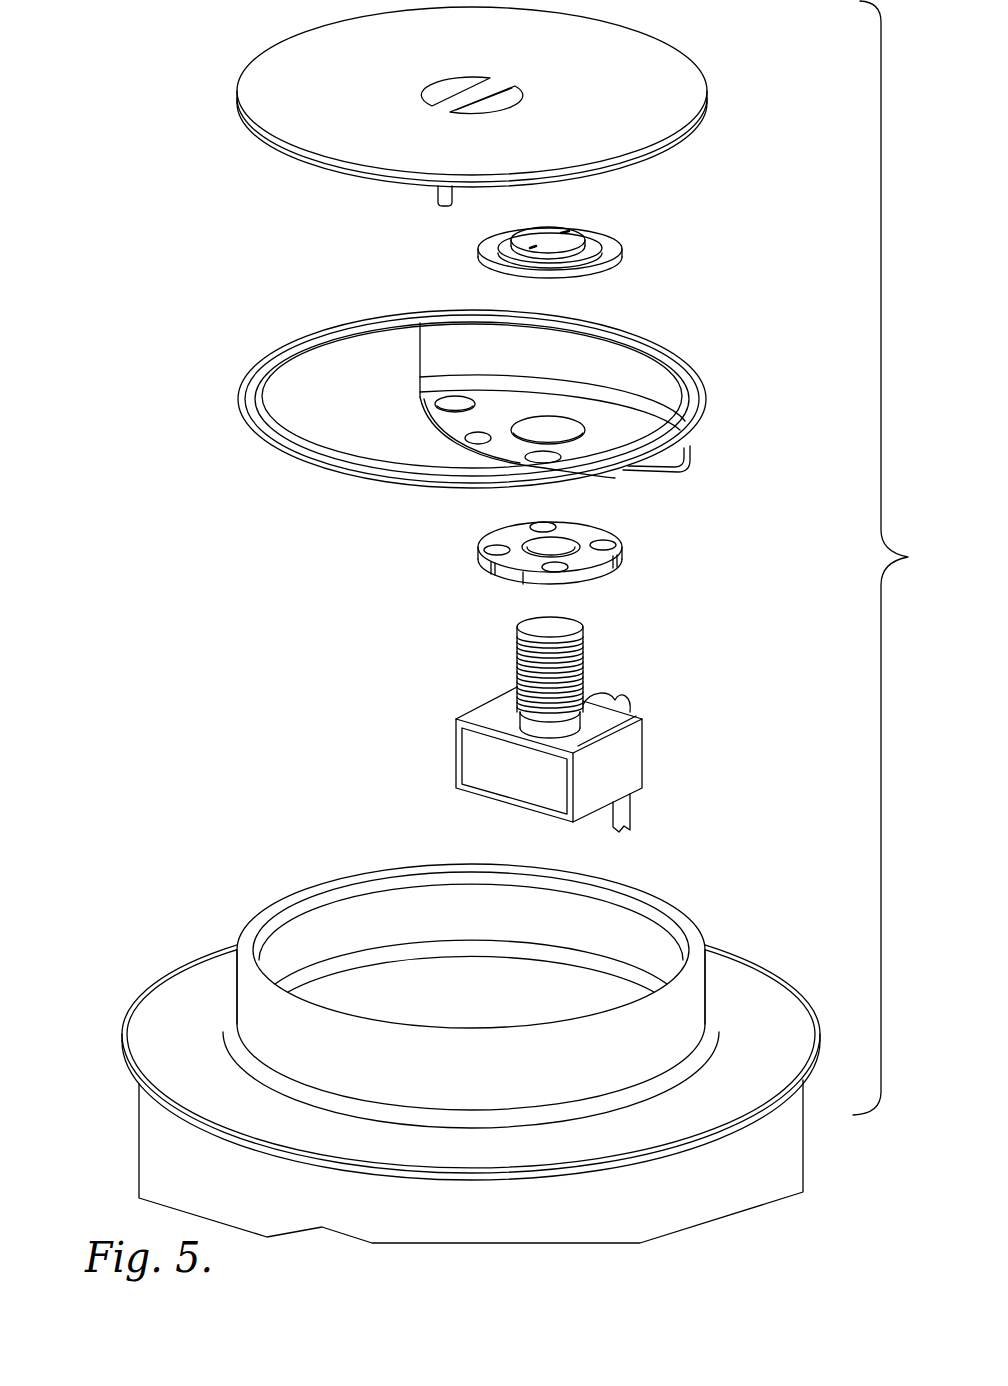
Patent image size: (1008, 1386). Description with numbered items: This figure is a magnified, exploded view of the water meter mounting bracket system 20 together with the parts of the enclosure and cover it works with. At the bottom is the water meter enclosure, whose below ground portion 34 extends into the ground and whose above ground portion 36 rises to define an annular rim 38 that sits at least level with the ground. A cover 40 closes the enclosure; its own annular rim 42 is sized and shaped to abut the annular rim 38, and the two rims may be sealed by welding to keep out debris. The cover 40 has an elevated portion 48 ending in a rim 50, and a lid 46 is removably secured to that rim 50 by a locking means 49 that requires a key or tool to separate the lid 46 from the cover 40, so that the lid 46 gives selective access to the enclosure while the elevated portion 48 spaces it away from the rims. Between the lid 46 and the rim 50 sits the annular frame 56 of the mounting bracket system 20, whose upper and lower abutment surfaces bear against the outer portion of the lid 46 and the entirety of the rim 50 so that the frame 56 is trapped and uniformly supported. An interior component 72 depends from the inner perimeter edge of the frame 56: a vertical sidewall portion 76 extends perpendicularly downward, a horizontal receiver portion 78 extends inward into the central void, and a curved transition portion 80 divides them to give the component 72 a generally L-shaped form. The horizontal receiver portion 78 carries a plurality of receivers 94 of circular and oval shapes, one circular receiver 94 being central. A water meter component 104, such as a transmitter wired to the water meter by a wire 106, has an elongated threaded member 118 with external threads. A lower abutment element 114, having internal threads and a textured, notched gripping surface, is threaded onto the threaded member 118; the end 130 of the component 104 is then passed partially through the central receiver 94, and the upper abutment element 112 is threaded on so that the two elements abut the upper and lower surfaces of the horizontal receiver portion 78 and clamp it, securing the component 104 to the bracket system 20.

The water meter mounting bracket system 20 is at (226, 470).
The below ground portion 34 is at (790, 1163).
The above ground portion 36 is at (745, 990).
The annular rim 38 is at (138, 1088).
The cover 40 is at (467, 1053).
The annular rim 42 is at (127, 1060).
The lid 46 is at (632, 55).
The elevated portion 48 is at (429, 996).
The locking means 49 is at (468, 98).
The rim 50 is at (252, 928).
The annular frame 56 is at (698, 370).
The interior component 72 is at (516, 368).
The vertical sidewall portion 76 is at (438, 350).
The horizontal receiver portion 78 is at (450, 422).
The transition portion 80 is at (438, 386).
The receivers 94 is at (457, 401).
The water meter component 104 is at (650, 766).
The wire 106 is at (621, 811).
The upper abutment element 112 is at (630, 247).
The lower abutment element 114 is at (632, 548).
The threaded member 118 is at (585, 665).
The end 130 is at (538, 630).